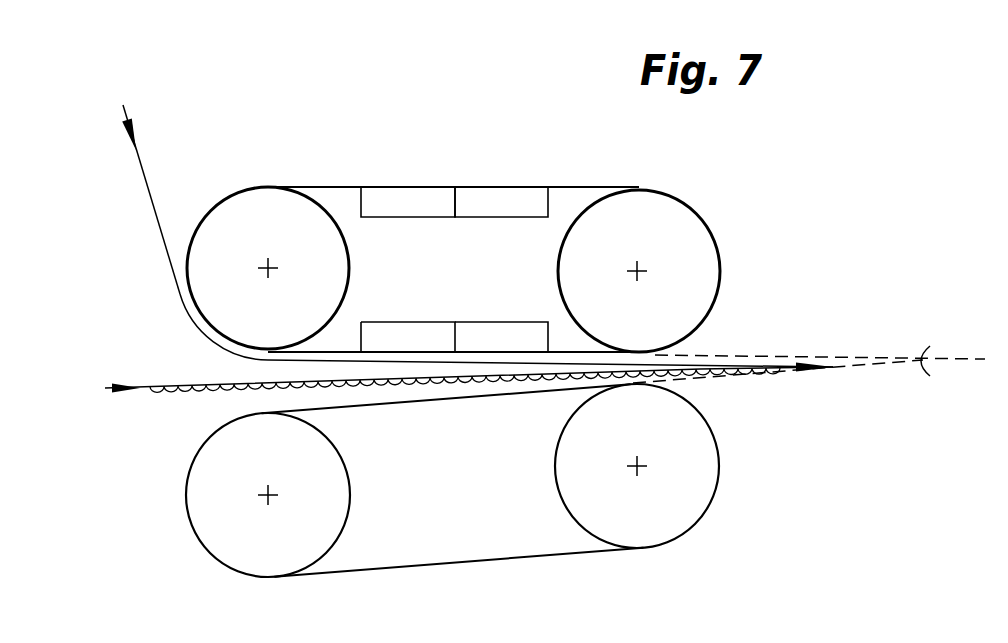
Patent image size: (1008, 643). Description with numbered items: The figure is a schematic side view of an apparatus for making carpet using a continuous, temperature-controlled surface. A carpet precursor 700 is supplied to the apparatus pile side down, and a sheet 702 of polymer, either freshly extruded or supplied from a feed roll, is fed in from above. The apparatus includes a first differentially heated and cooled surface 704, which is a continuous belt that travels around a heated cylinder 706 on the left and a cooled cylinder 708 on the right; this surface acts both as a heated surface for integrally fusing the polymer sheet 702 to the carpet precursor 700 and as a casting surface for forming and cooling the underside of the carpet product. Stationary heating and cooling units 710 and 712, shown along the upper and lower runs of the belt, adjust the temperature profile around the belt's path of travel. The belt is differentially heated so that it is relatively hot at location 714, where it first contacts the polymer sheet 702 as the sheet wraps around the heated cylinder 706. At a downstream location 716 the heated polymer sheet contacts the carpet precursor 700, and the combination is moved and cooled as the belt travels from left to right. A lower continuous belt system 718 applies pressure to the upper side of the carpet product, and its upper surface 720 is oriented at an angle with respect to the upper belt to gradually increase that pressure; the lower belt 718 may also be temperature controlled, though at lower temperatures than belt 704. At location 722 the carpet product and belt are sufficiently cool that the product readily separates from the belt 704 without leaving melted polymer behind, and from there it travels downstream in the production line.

The carpet precursor 700 is at (155, 389).
The sheet of polymer 702 is at (145, 180).
The differentially heated and cooled surface 704 is at (347, 185).
The heated cylinder 706 is at (273, 197).
The cooled cylinder 708 is at (642, 203).
The heating unit 710 is at (430, 192).
The cooling unit 712 is at (533, 197).
The location where belt first contacts polymer sheet 714 is at (180, 292).
The downstream location 716 is at (228, 369).
The lower continuous belt system 718 is at (452, 562).
The upper surface of the lower belt 720 is at (455, 398).
The separation location 722 is at (655, 368).